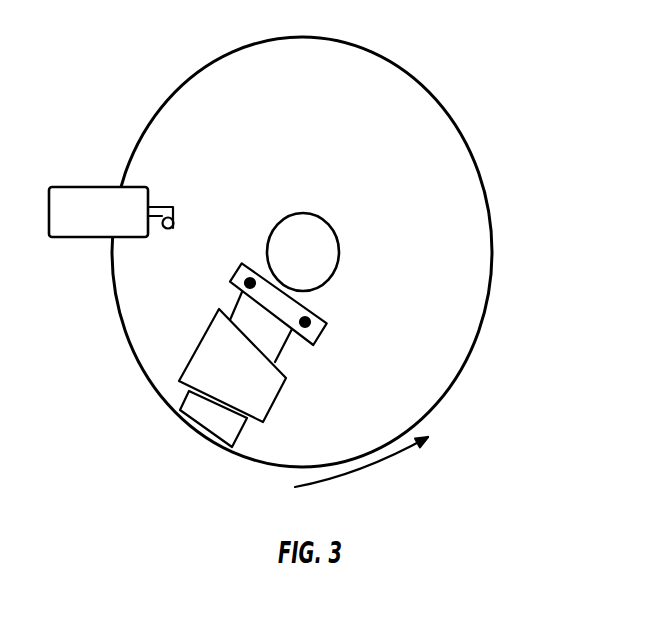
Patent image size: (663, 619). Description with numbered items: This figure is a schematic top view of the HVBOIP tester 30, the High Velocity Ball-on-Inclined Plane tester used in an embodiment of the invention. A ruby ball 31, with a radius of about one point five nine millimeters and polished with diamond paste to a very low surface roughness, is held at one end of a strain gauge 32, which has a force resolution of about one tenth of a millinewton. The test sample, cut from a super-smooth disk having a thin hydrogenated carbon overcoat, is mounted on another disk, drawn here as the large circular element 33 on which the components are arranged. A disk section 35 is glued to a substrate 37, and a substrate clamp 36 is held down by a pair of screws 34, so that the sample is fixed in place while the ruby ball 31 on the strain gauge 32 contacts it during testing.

The HVBOIP tester 30 is at (492, 165).
The ruby ball 31 is at (172, 227).
The strain gauge 32 is at (112, 222).
The disk 33 is at (389, 57).
The screws 34 is at (316, 315).
The disk section 35 is at (245, 378).
The substrate clamp 36 is at (281, 311).
The substrate 37 is at (212, 417).